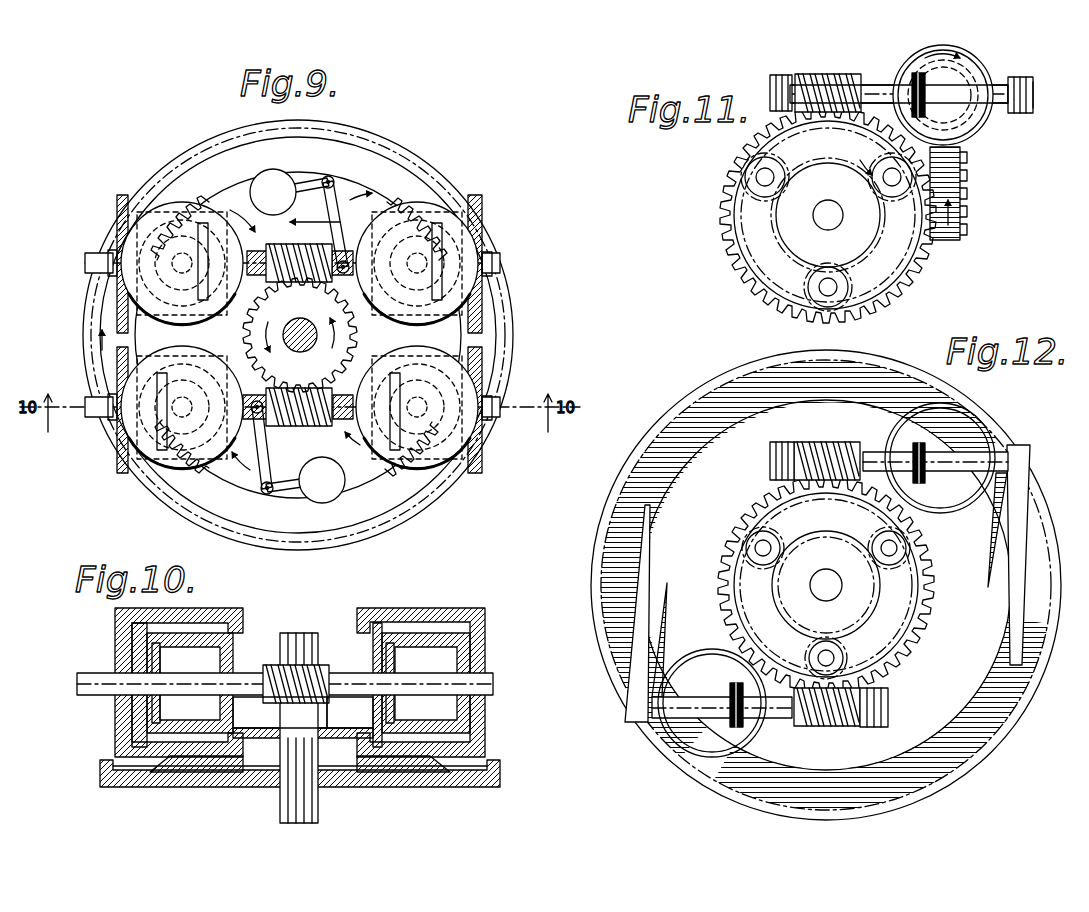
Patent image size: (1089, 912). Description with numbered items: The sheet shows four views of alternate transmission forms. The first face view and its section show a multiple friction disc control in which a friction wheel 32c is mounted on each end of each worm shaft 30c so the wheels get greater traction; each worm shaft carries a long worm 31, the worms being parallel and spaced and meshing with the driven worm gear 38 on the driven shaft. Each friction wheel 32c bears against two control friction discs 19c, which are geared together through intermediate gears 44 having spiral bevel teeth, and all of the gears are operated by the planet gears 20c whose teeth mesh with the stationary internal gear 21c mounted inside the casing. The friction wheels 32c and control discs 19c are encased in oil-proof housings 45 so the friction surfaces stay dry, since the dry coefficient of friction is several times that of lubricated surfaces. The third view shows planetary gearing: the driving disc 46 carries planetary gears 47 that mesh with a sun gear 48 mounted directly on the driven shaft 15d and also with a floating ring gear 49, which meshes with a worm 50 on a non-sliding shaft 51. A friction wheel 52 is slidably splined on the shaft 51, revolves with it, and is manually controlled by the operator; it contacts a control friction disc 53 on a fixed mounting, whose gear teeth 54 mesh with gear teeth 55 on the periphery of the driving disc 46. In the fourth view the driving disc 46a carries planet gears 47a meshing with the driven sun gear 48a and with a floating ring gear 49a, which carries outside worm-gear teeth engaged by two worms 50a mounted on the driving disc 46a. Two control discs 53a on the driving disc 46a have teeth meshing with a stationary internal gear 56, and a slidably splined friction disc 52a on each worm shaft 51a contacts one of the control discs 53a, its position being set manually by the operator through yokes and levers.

In FIG. 9, the control friction disc 19c is at (360, 200).
In FIG. 10, the control friction disc 19c is at (230, 642).
In FIG. 9, the planet gear 20c is at (170, 474).
In FIG. 10, the planet gear 20c is at (248, 772).
In FIG. 9, the stationary internal gear 21c is at (443, 479).
In FIG. 10, the stationary internal gear 21c is at (103, 770).
In FIG. 10, the worm shaft 30c is at (362, 680).
In FIG. 9, the long worm 31 is at (312, 246).
In FIG. 10, the long worm 31 is at (280, 668).
In FIG. 9, the friction wheel 32c is at (192, 200).
In FIG. 10, the friction wheel 32c is at (160, 709).
In FIG. 9, the driven worm gear 38 is at (352, 346).
In FIG. 10, the driven worm gear 38 is at (303, 712).
In FIG. 9, the intermediate gear 44 is at (480, 240).
In FIG. 10, the intermediate gear 44 is at (135, 610).
In FIG. 10, the oil-proof housing 45 is at (132, 642).
In FIG. 11, the driving disc 46 is at (900, 227).
In FIG. 12, the driving disc 46a is at (672, 470).
In FIG. 11, the planetary gear 47 is at (752, 180).
In FIG. 12, the planet gear 47a is at (782, 537).
In FIG. 11, the sun gear 48 is at (828, 215).
In FIG. 12, the driven sun gear 48a is at (826, 585).
In FIG. 11, the floating ring gear 49 is at (912, 274).
In FIG. 12, the floating ring gear 49a is at (930, 622).
In FIG. 11, the worm 50 is at (838, 62).
In FIG. 12, the worm 50a is at (845, 432).
In FIG. 11, the non-sliding shaft 51 is at (990, 88).
In FIG. 12, the worm shaft 51a is at (668, 710).
In FIG. 11, the friction wheel 52 is at (917, 75).
In FIG. 12, the slidably splined friction disc 52a is at (747, 722).
In FIG. 11, the control friction disc 53 is at (978, 130).
In FIG. 12, the control disc 53a is at (921, 448).
In FIG. 11, the gear teeth 54 is at (973, 67).
In FIG. 11, the gear teeth 55 is at (963, 200).
In FIG. 12, the stationary internal gear 56 is at (612, 520).
In FIG. 11, the driven shaft 15d is at (836, 196).